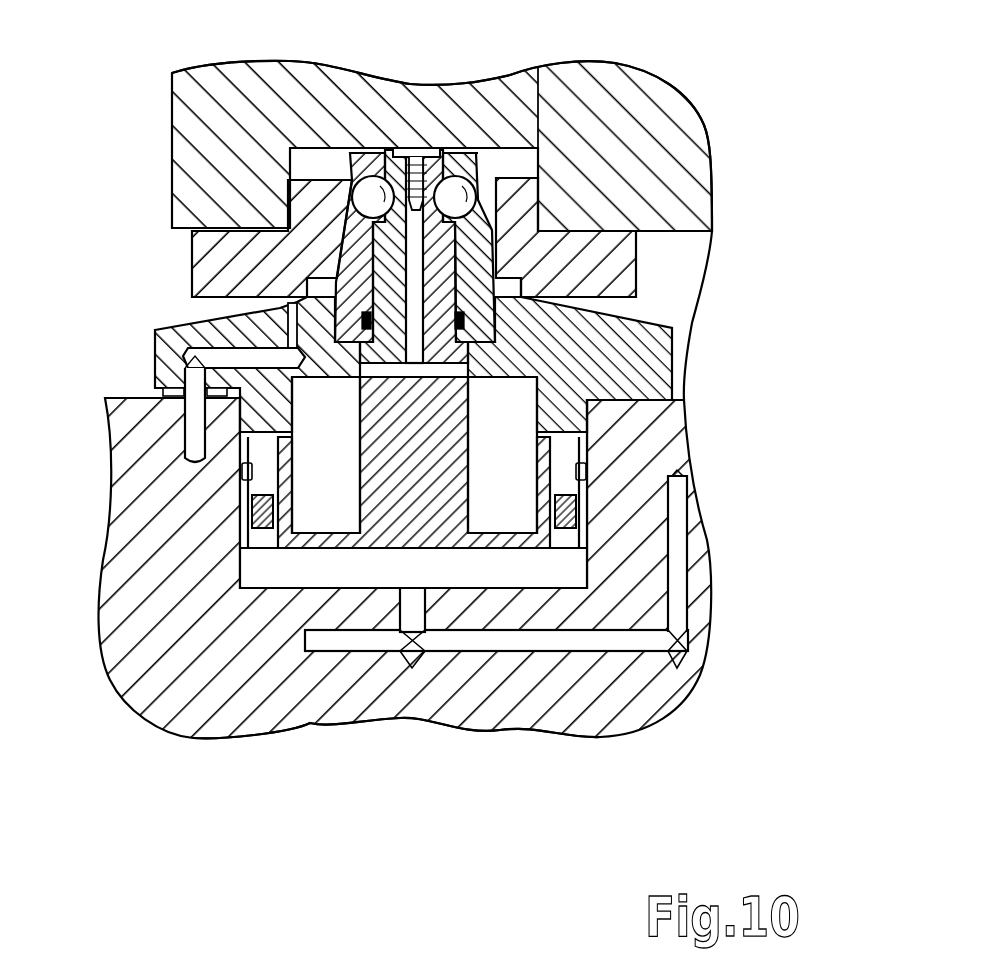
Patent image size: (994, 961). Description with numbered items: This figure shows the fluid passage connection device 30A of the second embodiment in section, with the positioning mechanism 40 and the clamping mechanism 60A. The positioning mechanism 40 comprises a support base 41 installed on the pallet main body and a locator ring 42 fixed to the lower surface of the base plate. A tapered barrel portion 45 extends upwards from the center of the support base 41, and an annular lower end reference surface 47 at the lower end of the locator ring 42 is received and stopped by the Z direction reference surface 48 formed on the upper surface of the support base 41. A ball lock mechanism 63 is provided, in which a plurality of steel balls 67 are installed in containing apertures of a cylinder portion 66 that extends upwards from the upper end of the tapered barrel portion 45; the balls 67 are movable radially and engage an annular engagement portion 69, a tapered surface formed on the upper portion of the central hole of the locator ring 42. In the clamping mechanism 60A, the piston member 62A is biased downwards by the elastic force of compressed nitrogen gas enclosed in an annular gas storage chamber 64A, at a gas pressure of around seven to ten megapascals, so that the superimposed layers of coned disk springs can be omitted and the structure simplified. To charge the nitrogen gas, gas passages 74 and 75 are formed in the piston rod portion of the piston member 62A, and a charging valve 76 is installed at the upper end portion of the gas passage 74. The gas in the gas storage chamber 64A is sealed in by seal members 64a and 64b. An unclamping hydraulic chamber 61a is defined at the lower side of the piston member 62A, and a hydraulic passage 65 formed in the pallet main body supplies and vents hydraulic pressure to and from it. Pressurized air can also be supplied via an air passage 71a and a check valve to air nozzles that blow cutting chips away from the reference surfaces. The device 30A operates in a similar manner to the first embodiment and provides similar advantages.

The fluid passage connection device 30A is at (235, 815).
The positioning mechanism 40 is at (232, 655).
The clamping mechanism 60A is at (359, 756).
The support base 41 is at (150, 343).
The locator ring 42 is at (186, 262).
The tapered barrel portion 45 is at (542, 233).
The lower end reference surface 47 is at (560, 312).
The Z direction reference surface 48 is at (472, 272).
The unclamping hydraulic chamber 61a is at (361, 572).
The piston member 62A is at (276, 553).
The ball lock mechanism 63 is at (492, 147).
The gas storage chamber 64A is at (245, 512).
The seal member 64a is at (560, 512).
The seal member 64b is at (365, 320).
The hydraulic passage 65 is at (497, 637).
The cylinder portion 66 is at (364, 172).
The steel balls 67 is at (350, 158).
The annular engagement portion 69 is at (642, 125).
The air passage 71a is at (190, 430).
The gas passage 74 is at (418, 300).
The gas passage 75 is at (440, 367).
The charging valve 76 is at (414, 146).